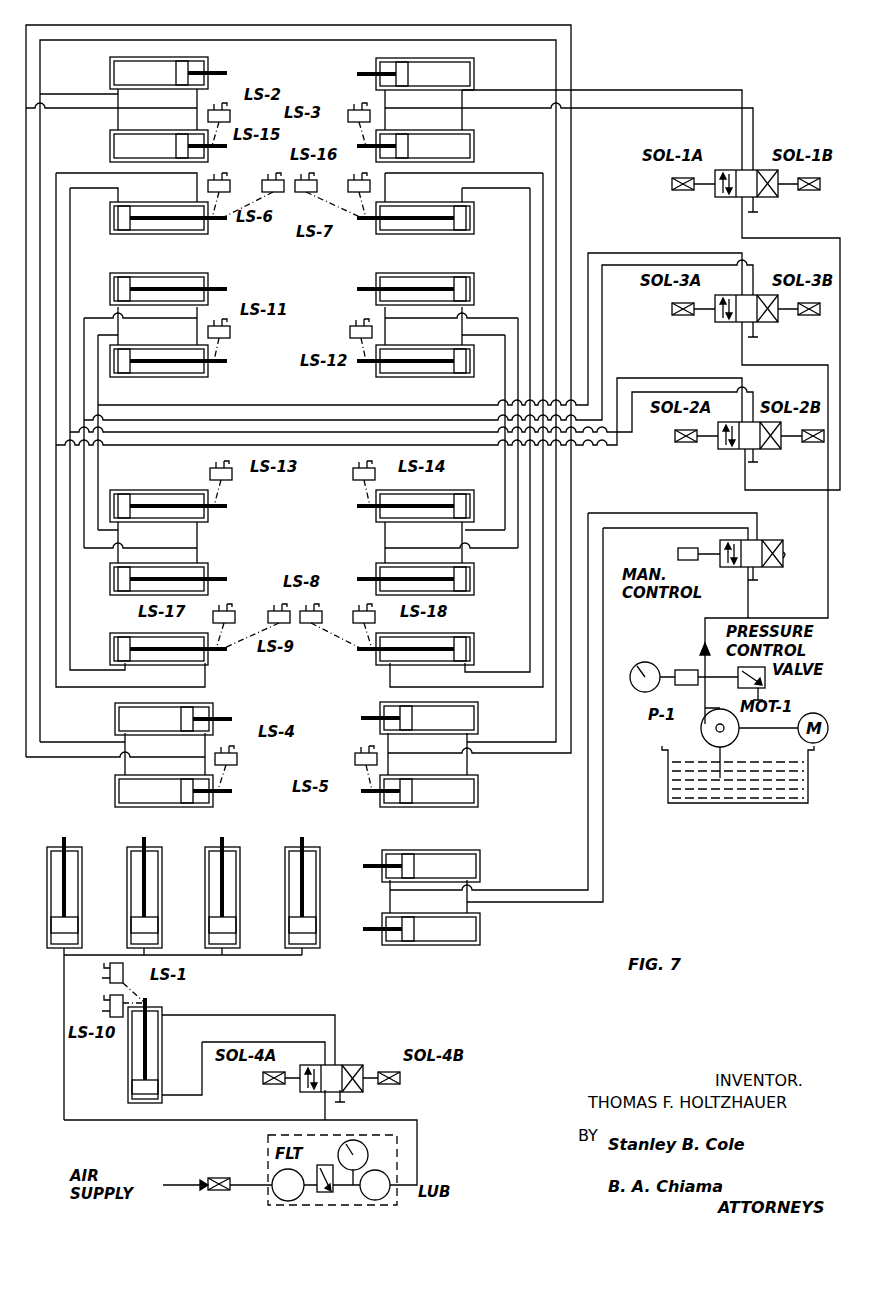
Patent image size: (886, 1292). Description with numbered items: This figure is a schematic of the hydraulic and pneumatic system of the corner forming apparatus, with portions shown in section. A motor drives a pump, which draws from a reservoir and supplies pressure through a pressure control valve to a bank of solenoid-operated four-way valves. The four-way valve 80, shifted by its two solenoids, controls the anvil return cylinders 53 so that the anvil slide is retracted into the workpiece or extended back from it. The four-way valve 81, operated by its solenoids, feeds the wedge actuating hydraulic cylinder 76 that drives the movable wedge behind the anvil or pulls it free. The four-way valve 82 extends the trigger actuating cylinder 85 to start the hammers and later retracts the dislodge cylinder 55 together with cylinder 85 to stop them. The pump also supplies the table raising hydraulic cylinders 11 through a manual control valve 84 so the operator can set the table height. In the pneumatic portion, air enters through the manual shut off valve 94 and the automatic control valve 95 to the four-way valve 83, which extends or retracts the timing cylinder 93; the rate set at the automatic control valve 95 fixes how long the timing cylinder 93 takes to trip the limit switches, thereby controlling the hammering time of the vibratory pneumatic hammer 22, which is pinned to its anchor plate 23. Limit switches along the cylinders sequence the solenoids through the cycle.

The anchor plate 23 is at (110, 74).
The anvil return cylinders 53 is at (110, 146).
The hydraulic cylinder 76 is at (110, 217).
The cylinder 85 is at (110, 289).
The dislodge cylinder 55 is at (140, 377).
The hydraulic cylinders 11 is at (480, 866).
The vibratory pneumatic hammer 22 is at (82, 915).
The timing cylinder 93 is at (128, 1076).
The 4-way valve 80 is at (762, 170).
The four-way valve 82 is at (720, 322).
The 4-way valve 81 is at (725, 449).
The manual control valve 84 is at (783, 556).
The four-way valve 83 is at (345, 1065).
The manual shut off valve 94 is at (215, 1178).
The automatic control valve 95 is at (335, 1184).